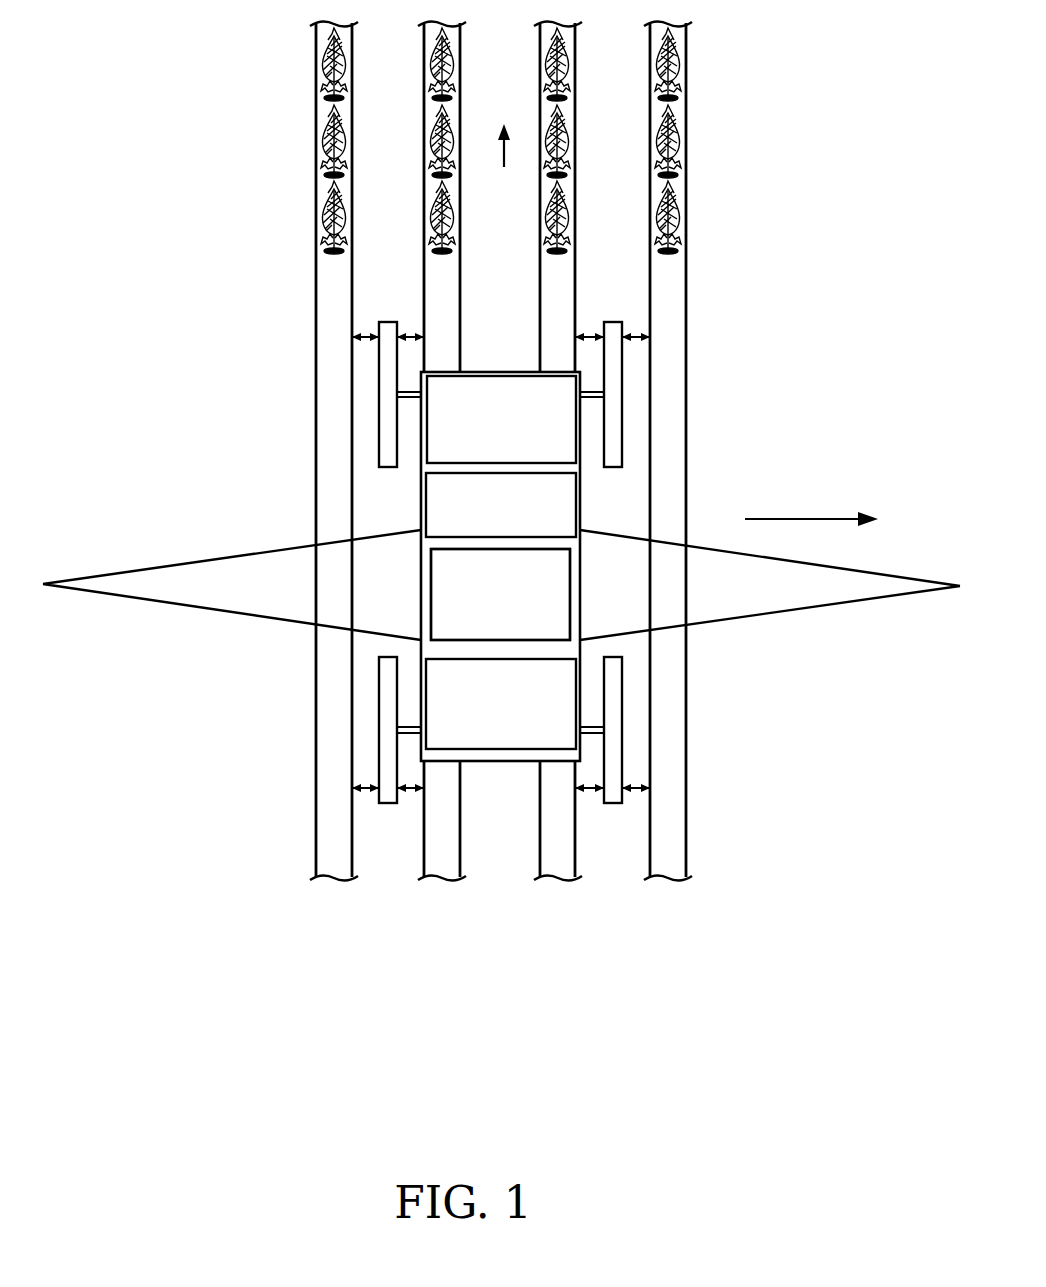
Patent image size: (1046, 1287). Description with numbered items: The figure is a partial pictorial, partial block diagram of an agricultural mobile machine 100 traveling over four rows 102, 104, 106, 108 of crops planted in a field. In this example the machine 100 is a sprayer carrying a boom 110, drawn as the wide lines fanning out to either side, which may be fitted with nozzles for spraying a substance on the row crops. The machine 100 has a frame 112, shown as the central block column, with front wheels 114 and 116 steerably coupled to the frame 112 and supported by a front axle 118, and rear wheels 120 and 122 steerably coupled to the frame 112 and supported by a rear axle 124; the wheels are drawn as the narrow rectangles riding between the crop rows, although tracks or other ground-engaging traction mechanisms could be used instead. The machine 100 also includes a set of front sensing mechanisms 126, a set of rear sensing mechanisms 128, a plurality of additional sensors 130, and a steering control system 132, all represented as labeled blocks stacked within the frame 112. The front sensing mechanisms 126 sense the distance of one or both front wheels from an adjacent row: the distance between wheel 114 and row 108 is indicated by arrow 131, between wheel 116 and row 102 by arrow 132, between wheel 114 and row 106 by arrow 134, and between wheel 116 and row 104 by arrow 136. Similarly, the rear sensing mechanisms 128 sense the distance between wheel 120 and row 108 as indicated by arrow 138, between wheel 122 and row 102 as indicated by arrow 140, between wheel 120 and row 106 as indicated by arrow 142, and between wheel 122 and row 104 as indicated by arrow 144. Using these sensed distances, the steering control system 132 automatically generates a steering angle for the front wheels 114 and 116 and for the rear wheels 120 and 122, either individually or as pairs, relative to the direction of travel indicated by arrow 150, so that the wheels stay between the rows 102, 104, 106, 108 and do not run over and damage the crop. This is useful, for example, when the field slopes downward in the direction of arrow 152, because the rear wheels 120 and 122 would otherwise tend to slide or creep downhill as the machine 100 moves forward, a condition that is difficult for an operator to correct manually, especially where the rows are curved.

The agricultural mobile machine 100 is at (582, 500).
The row 102 is at (316, 97).
The row 104 is at (424, 97).
The row 106 is at (540, 103).
The row 108 is at (650, 92).
The boom 110 is at (808, 608).
The frame 112 is at (580, 583).
The front wheel 114 is at (622, 380).
The front wheel 116 is at (379, 402).
The front axle 118 is at (408, 400).
The rear wheel 120 is at (622, 700).
The rear wheel 122 is at (379, 712).
The rear axle 124 is at (600, 735).
The front sensing mechanisms 126 is at (580, 432).
The rear sensing mechanisms 128 is at (507, 750).
The additional sensors 130 is at (605, 510).
The arrow 131 is at (641, 333).
The steering control system 132 is at (365, 333).
The arrow 134 is at (587, 333).
The arrow 136 is at (411, 333).
The arrow 138 is at (636, 792).
The arrow 140 is at (366, 784).
The arrow 142 is at (590, 792).
The arrow 144 is at (412, 783).
The arrow 150 is at (504, 159).
The arrow 152 is at (810, 519).